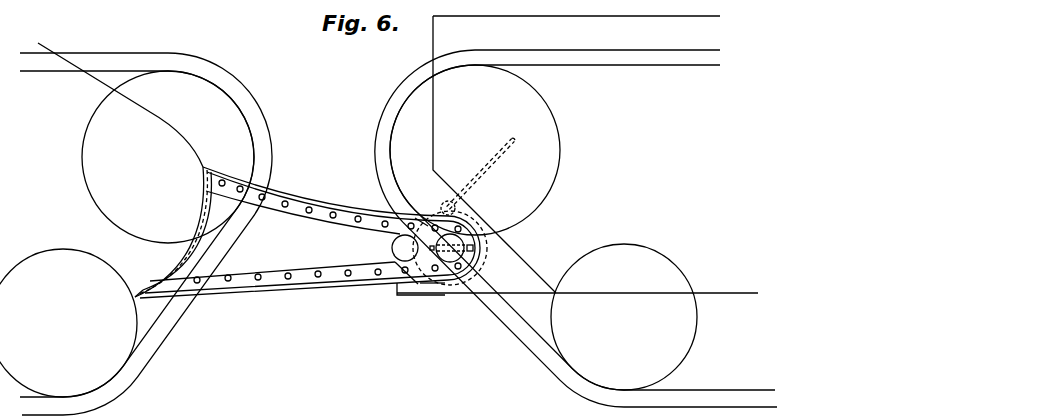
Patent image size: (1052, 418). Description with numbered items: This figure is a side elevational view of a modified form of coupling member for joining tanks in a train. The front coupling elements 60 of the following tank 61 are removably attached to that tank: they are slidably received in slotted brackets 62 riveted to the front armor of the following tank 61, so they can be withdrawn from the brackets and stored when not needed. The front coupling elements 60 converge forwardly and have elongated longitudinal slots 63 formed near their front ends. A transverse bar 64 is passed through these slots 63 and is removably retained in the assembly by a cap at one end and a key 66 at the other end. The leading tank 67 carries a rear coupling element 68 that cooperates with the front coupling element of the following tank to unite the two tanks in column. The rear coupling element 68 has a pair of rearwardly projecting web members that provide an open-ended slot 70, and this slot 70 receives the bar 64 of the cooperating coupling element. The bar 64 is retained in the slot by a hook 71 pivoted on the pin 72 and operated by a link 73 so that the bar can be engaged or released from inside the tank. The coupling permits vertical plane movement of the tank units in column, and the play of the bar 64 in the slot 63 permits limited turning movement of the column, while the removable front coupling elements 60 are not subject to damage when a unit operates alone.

The front coupling element 60 is at (298, 286).
The following tank 61 is at (126, 384).
The slotted bracket 62 is at (163, 292).
The elongated longitudinal slot 63 is at (392, 248).
The transverse bar 64 is at (450, 260).
The key 66 is at (428, 225).
The leading tank 67 is at (551, 374).
The rear coupling element 68 is at (426, 292).
The open-ended slot 70 is at (412, 272).
The hook 71 is at (407, 258).
The pin 72 is at (486, 256).
The link 73 is at (503, 156).